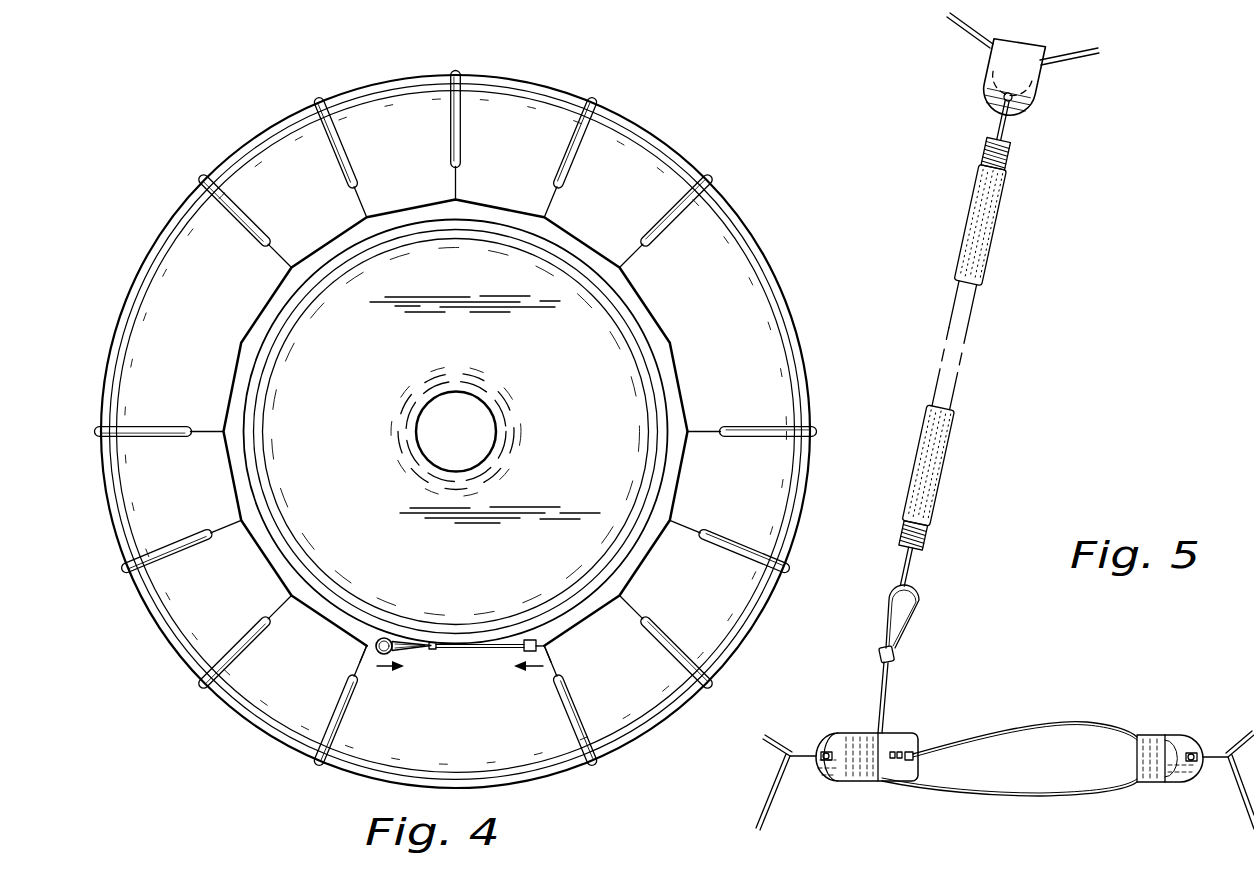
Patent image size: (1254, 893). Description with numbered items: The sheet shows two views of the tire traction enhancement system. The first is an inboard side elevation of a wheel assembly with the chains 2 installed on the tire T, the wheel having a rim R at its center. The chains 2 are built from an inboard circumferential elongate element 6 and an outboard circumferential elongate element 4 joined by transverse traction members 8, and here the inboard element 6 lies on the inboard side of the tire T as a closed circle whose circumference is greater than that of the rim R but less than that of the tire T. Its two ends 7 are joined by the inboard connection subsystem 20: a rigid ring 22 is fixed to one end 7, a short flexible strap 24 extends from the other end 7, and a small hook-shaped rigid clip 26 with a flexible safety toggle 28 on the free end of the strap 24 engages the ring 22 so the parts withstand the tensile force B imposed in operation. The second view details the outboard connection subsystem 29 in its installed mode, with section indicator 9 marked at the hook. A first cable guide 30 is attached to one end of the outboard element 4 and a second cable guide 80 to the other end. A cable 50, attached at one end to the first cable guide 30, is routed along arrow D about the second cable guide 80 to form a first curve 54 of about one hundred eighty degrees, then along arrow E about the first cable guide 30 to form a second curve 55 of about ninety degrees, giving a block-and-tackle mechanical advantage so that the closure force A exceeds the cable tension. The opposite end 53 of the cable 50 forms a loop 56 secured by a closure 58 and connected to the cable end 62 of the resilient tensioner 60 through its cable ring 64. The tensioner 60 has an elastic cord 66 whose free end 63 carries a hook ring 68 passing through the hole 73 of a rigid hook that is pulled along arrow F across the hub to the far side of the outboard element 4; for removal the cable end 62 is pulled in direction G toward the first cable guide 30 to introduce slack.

In FIG. 4, the chains 2 is at (456, 414).
In FIG. 4, the tire T is at (640, 172).
In FIG. 4, the transverse traction members 8 is at (459, 100).
In FIG. 5, the transverse traction members 8 is at (1169, 844).
In FIG. 4, the inboard circumferential elongate element 6 is at (487, 203).
In FIG. 4, the rim R is at (519, 232).
In FIG. 4, the ends of the inboard circumferential elongate element 7 is at (366, 646).
In FIG. 5, the ends of the inboard circumferential elongate element 7 is at (862, 842).
In FIG. 4, the inboard connection subsystem 20 is at (445, 608).
In FIG. 4, the rigid ring 22 is at (383, 637).
In FIG. 4, the rigid clip 26 is at (409, 651).
In FIG. 4, the flexible safety toggle 28 is at (433, 644).
In FIG. 4, the flexible strap 24 is at (500, 639).
In FIG. 4, the tensile force B is at (378, 667).
In FIG. 5, the resilient tensioner 60 is at (1005, 440).
In FIG. 5, the hole 73 is at (1012, 78).
In FIG. 5, the free end 63 is at (1003, 120).
In FIG. 5, the hook ring 68 is at (995, 153).
In FIG. 5, the elastic cord 66 is at (980, 224).
In FIG. 5, the cable ring 64 is at (913, 536).
In FIG. 5, the cable end 62 is at (906, 566).
In FIG. 5, the outboard circumferential elongate element 4 is at (960, 30).
In FIG. 5, the outboard connection subsystem 29 is at (1094, 21).
In FIG. 5, the section 9- 9 is at (1108, 108).
In FIG. 5, the direction of hook pull F is at (1038, 238).
In FIG. 5, the direction of cord stretching for removal G is at (995, 465).
In FIG. 5, the loop 56 is at (922, 603).
In FIG. 5, the closure 58 is at (898, 656).
In FIG. 5, the second opposite end 53 is at (878, 668).
In FIG. 5, the first cable guide 30 is at (838, 733).
In FIG. 5, the second curve 55 is at (890, 740).
In FIG. 5, the cable 50 is at (1025, 737).
In FIG. 5, the closure force A is at (983, 757).
In FIG. 5, the direction of cable routing about first cable guide E is at (857, 817).
In FIG. 5, the direction of cable routing about second cable guide D is at (1101, 703).
In FIG. 5, the first curve 54 is at (1158, 733).
In FIG. 5, the second cable guide 80 is at (1198, 738).